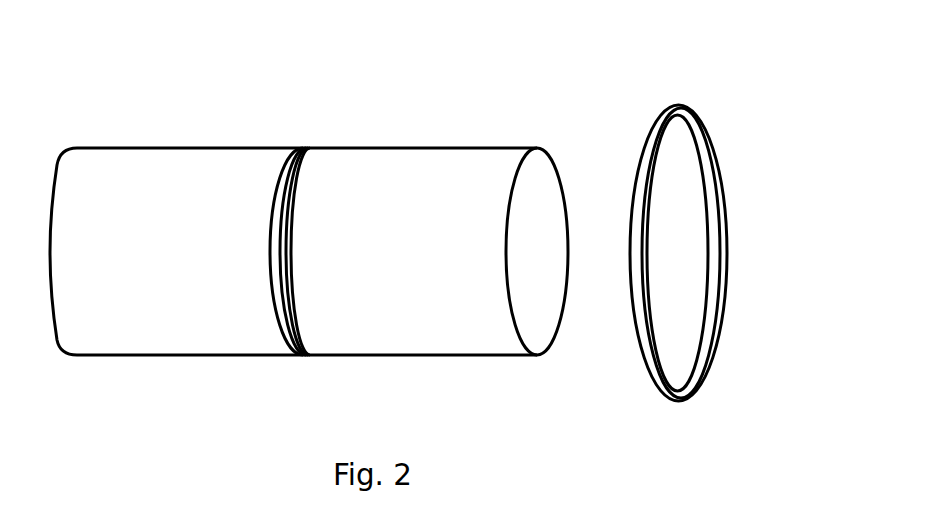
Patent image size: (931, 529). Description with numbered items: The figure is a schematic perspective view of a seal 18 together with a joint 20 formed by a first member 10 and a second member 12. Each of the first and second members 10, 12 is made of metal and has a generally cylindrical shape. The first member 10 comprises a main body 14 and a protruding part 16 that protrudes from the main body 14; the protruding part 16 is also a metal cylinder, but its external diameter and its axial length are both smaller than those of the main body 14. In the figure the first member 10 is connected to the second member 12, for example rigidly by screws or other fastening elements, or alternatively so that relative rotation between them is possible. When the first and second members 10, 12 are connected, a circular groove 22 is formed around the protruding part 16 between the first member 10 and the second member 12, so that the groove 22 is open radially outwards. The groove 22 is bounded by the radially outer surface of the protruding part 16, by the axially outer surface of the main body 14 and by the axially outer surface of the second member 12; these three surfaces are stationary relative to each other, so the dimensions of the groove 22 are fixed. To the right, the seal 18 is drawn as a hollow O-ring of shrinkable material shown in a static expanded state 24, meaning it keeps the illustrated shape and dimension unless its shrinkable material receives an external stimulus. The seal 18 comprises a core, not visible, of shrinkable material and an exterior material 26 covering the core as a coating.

The first member 10 is at (180, 258).
The second member 12 is at (416, 258).
The main body 14 is at (178, 333).
The protruding part 16 is at (282, 310).
The seal 18 is at (707, 125).
The joint 20 is at (186, 70).
The groove 22 is at (292, 166).
The static expanded state 24 is at (630, 82).
The exterior material 26 is at (652, 373).